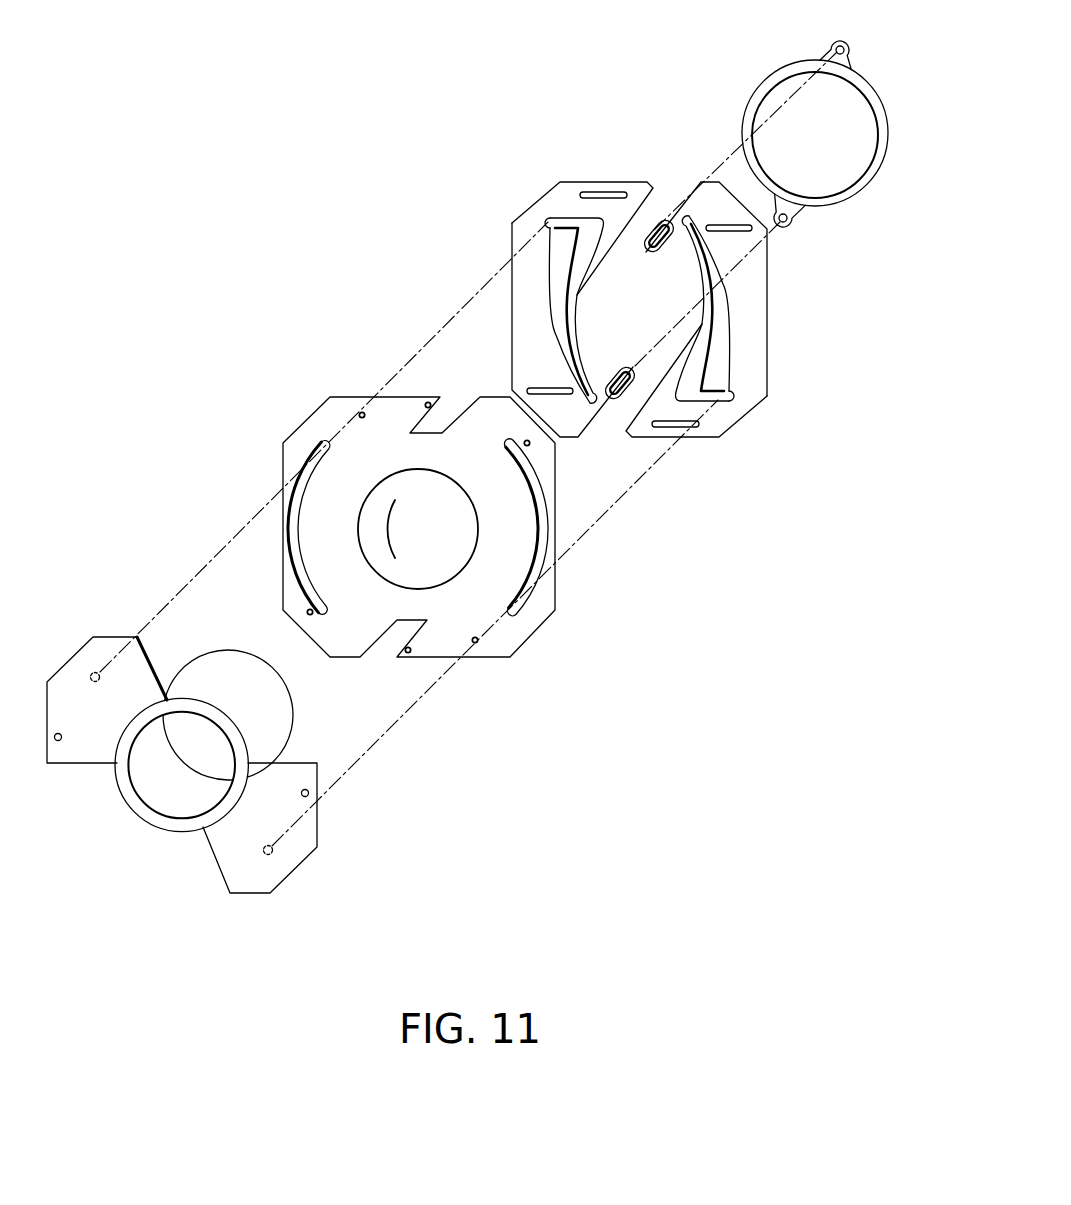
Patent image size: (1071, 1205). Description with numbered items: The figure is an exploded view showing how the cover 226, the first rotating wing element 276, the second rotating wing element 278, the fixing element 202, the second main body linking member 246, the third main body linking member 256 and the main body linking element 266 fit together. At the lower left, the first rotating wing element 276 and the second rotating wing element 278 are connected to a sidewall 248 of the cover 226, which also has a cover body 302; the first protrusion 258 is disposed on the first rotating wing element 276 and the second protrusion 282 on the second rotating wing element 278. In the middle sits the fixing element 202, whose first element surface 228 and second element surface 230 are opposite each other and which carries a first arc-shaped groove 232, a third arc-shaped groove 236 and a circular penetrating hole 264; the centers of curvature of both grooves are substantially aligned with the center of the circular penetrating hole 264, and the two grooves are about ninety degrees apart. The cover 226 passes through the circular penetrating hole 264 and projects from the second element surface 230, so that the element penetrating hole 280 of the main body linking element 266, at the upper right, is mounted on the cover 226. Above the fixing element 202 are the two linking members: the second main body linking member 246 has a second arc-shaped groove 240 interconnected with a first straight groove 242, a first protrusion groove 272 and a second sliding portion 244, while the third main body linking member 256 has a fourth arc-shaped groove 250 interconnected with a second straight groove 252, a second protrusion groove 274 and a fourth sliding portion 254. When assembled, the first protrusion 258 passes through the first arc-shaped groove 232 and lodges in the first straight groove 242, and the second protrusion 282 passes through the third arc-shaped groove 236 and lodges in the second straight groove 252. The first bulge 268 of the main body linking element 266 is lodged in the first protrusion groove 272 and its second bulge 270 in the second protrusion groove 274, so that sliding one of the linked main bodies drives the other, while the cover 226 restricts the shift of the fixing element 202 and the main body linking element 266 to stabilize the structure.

The fixing element 202 is at (735, 520).
The second element surface 230 is at (560, 470).
The first element surface 228 is at (482, 437).
The circular penetrating hole 264 is at (452, 538).
The first arc-shaped groove 232 is at (520, 612).
The third arc-shaped groove 236 is at (324, 598).
The third main body linking member 256 is at (357, 135).
The fourth sliding portion 254 is at (587, 192).
The second straight groove 252 is at (556, 216).
The fourth arc-shaped groove 250 is at (562, 262).
The second protrusion groove 274 is at (611, 380).
The second main body linking member 246 is at (838, 320).
The second sliding portion 244 is at (728, 229).
The first protrusion groove 272 is at (664, 243).
The second arc-shaped groove 240 is at (715, 345).
The first straight groove 242 is at (715, 400).
The main body linking element 266 is at (590, 27).
The first bulge 268 is at (836, 49).
The element penetrating hole 280 is at (778, 100).
The second bulge 270 is at (779, 207).
The cover 226 is at (488, 707).
The sidewall 248 is at (283, 713).
The cover body 302 is at (273, 737).
The second rotating wing element 278 is at (118, 637).
The second protrusion 282 is at (92, 674).
The first rotating wing element 276 is at (318, 822).
The first protrusion 258 is at (272, 855).